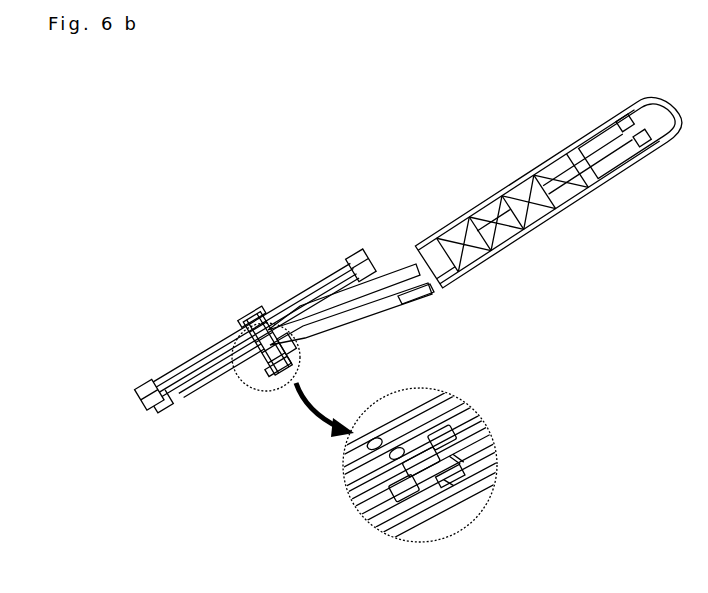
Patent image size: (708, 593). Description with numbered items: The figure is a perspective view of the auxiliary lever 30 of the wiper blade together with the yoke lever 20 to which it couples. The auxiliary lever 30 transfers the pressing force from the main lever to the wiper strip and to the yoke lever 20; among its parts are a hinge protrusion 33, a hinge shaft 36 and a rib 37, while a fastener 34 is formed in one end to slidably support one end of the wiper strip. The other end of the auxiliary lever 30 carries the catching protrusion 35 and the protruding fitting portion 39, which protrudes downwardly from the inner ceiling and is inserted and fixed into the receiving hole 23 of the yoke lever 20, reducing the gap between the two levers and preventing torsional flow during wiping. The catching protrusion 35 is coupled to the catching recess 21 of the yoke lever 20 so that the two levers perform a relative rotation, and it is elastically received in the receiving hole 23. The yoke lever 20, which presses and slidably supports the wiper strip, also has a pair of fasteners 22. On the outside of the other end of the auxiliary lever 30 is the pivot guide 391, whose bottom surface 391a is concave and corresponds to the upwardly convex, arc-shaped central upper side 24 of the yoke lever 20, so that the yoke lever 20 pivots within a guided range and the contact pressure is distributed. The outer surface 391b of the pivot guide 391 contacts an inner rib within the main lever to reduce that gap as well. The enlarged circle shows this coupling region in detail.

The yoke lever 20 is at (196, 351).
The catching recess 21 is at (260, 322).
The fasteners 22 is at (155, 376).
The receiving hole 23 is at (279, 321).
The central upper side 24 is at (497, 438).
The auxiliary lever 30 is at (552, 148).
The hinge protrusion 33 is at (412, 306).
The fastener 34 is at (628, 98).
The catching protrusion 35 is at (302, 368).
The hinge shaft 36 is at (389, 270).
The rib 37 is at (366, 318).
The protruding fitting portion 39 is at (240, 377).
The pivot guide 391 is at (272, 390).
The bottom surface 391a is at (468, 526).
The outer surface 391b is at (447, 520).